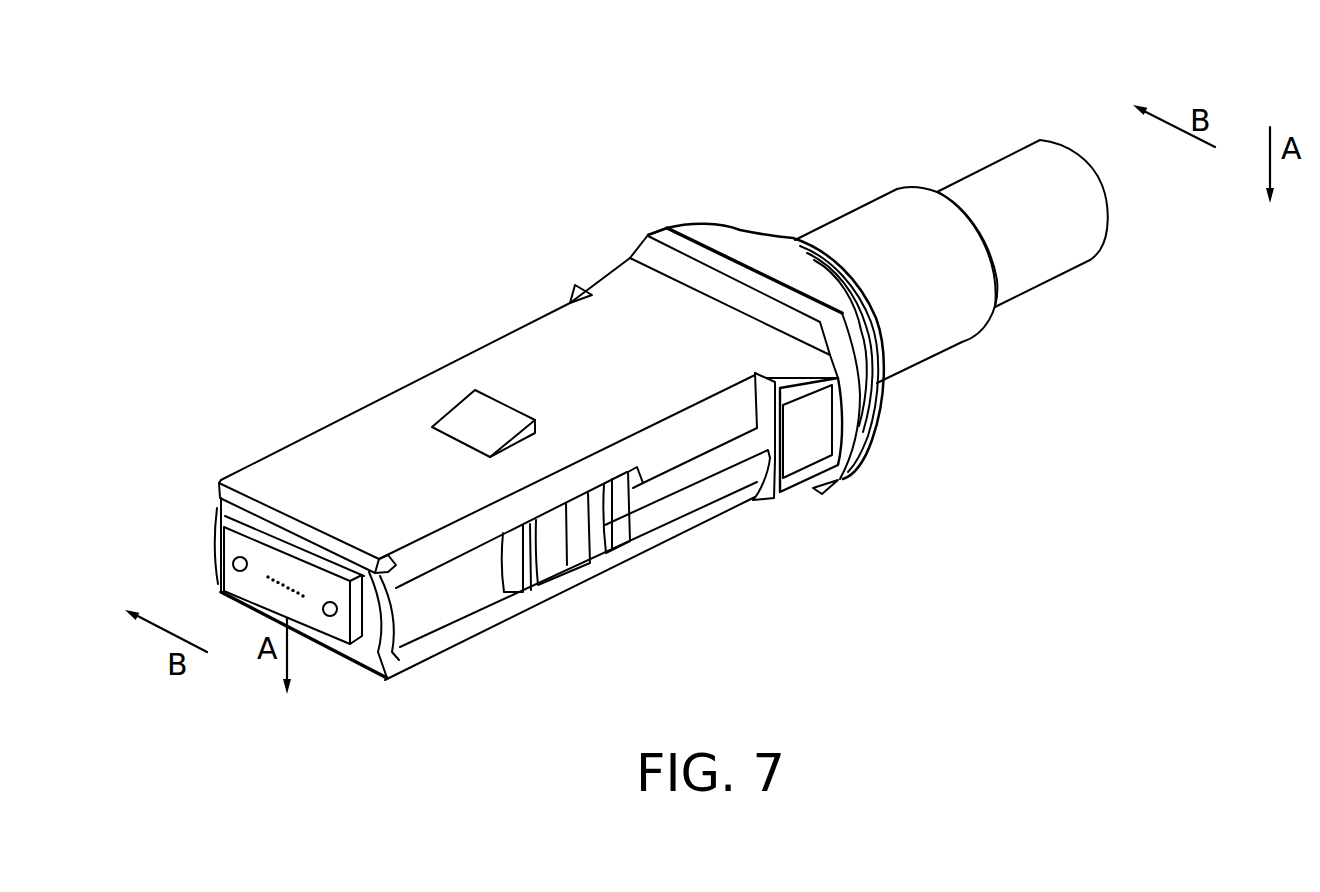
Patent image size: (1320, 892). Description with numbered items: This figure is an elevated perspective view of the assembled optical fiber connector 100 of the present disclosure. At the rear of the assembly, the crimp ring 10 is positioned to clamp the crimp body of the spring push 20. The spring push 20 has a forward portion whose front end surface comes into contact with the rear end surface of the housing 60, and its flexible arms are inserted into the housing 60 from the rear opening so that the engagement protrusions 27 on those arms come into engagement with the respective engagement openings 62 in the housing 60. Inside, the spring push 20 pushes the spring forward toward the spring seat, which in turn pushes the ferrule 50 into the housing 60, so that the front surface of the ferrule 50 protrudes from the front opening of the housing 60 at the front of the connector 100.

The optical fiber connector 100 is at (495, 233).
The crimp ring 10 is at (948, 325).
The spring push 20 is at (707, 233).
The engagement protrusion 27 is at (620, 513).
The ferrule 50 is at (267, 562).
The housing 60 is at (433, 392).
The engagement opening 62 is at (608, 554).